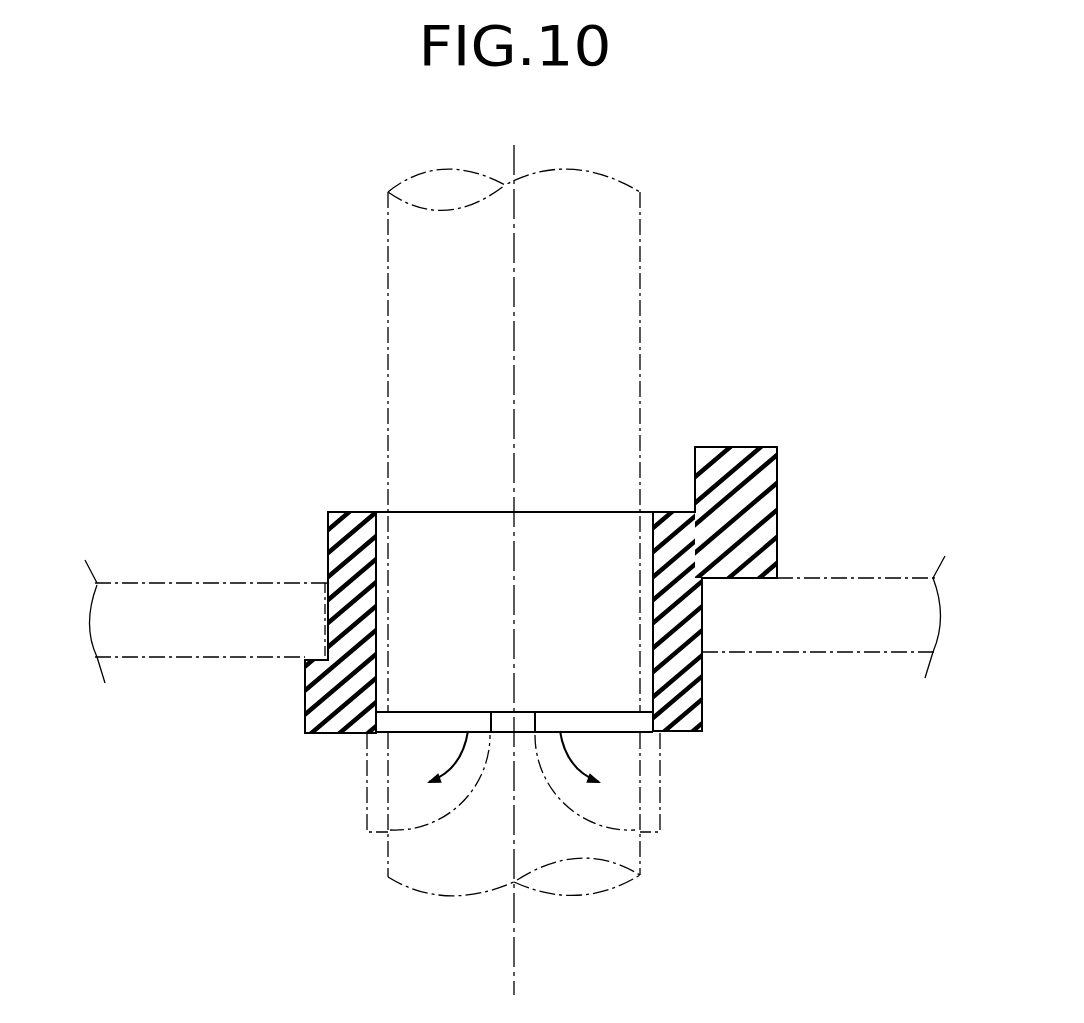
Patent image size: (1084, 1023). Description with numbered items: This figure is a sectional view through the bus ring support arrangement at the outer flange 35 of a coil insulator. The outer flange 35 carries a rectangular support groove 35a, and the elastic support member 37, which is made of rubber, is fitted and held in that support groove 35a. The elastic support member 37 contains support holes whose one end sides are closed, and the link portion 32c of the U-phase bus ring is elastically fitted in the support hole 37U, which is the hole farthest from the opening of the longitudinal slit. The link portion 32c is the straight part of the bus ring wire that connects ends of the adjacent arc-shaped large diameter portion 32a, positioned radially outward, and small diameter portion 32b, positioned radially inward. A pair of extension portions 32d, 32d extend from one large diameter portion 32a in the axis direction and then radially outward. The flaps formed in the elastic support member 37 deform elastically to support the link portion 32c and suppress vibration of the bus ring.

The link portion 32c is at (640, 293).
The small diameter portion 32b is at (410, 728).
The large diameter portion 32a is at (498, 722).
The extension portion 32d is at (447, 712).
The outer flange 35 is at (175, 585).
The support groove 35a is at (345, 570).
The elastic support member 37 is at (306, 697).
The support hole 37U is at (377, 545).